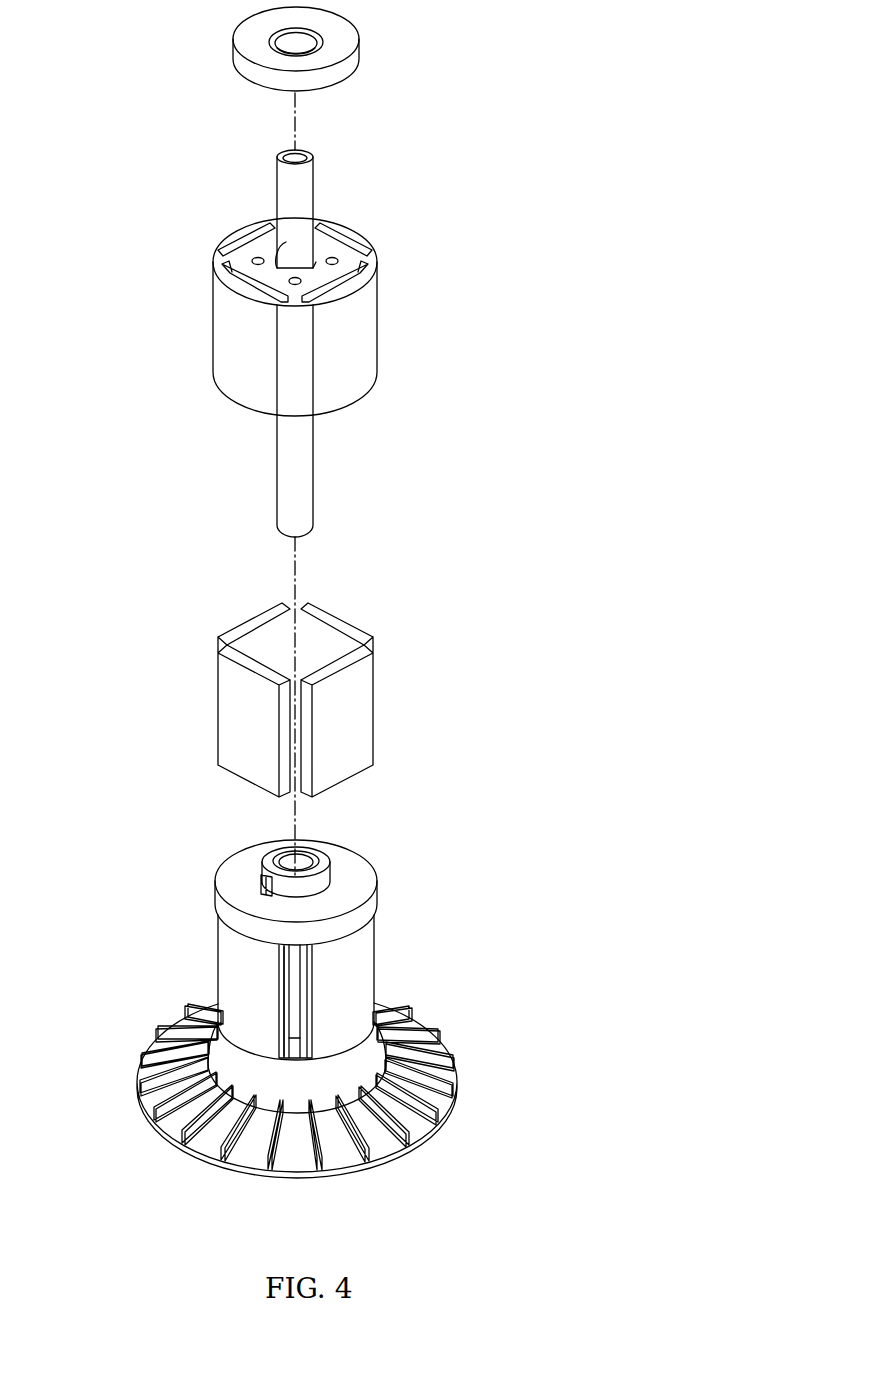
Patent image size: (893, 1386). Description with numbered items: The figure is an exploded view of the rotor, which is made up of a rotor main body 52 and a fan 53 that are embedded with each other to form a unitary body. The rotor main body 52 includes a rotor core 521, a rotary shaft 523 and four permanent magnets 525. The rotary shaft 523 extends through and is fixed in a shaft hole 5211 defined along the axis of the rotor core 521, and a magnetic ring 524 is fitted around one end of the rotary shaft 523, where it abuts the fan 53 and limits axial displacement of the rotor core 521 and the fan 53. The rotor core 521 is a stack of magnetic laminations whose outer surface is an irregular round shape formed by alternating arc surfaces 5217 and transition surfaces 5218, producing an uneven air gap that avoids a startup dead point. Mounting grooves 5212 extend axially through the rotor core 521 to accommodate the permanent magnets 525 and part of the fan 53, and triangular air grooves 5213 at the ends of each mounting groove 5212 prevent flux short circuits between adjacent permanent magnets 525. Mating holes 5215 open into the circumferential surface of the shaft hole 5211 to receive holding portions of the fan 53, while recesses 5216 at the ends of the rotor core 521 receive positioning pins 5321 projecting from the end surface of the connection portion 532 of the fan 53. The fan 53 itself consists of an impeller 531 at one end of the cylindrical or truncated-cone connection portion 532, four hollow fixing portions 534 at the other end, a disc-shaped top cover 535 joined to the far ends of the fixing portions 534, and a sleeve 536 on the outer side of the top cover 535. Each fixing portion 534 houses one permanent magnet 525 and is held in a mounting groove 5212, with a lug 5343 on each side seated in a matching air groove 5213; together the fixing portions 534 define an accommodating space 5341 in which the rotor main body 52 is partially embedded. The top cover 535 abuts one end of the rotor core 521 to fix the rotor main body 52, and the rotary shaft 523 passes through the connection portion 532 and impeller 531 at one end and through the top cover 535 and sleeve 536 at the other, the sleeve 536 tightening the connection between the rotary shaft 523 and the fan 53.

The rotor main body 52 is at (312, 284).
The rotor core 521 is at (307, 284).
The shaft hole 5211 is at (291, 283).
The mounting groove 5212 is at (231, 273).
The air groove 5213 is at (226, 266).
The mating hole 5215 is at (285, 235).
The recess 5216 is at (257, 257).
The arc surface 5217 is at (378, 262).
The transition surface 5218 is at (363, 309).
The rotary shaft 523 is at (306, 180).
The magnetic ring 524 is at (341, 42).
The permanent magnet 525 is at (368, 611).
The fan 53 is at (307, 995).
The impeller 531 is at (422, 1100).
The connection portion 532 is at (238, 1065).
The positioning pin 5321 is at (295, 987).
The fixing portion 534 is at (329, 999).
The accommodating space 5341 is at (303, 999).
The lug 5343 is at (312, 1040).
The top cover 535 is at (343, 892).
The sleeve 536 is at (318, 857).